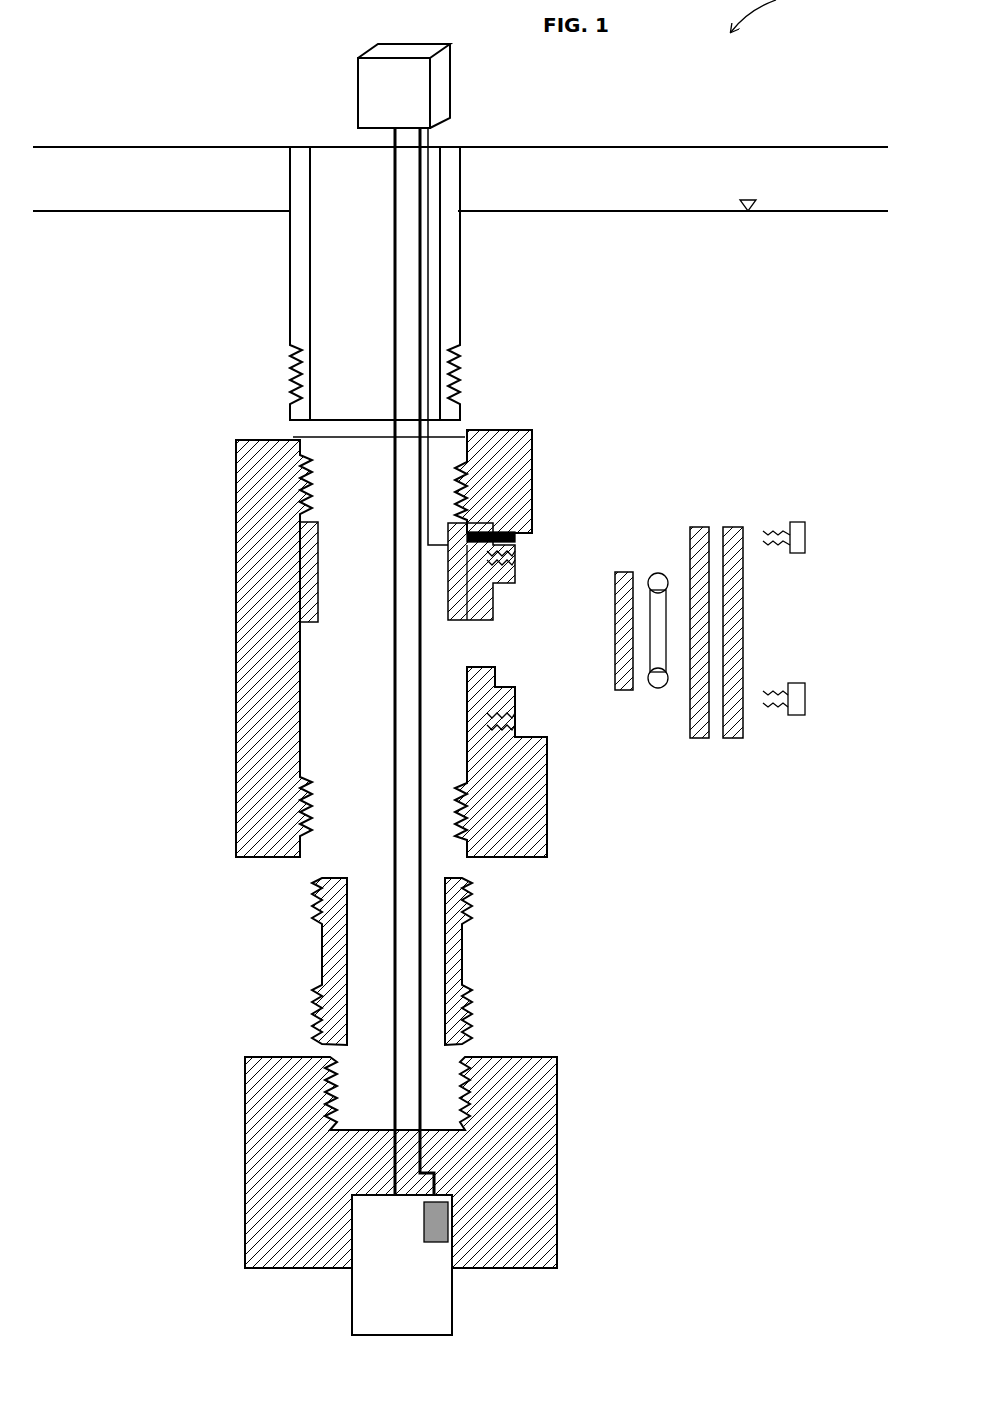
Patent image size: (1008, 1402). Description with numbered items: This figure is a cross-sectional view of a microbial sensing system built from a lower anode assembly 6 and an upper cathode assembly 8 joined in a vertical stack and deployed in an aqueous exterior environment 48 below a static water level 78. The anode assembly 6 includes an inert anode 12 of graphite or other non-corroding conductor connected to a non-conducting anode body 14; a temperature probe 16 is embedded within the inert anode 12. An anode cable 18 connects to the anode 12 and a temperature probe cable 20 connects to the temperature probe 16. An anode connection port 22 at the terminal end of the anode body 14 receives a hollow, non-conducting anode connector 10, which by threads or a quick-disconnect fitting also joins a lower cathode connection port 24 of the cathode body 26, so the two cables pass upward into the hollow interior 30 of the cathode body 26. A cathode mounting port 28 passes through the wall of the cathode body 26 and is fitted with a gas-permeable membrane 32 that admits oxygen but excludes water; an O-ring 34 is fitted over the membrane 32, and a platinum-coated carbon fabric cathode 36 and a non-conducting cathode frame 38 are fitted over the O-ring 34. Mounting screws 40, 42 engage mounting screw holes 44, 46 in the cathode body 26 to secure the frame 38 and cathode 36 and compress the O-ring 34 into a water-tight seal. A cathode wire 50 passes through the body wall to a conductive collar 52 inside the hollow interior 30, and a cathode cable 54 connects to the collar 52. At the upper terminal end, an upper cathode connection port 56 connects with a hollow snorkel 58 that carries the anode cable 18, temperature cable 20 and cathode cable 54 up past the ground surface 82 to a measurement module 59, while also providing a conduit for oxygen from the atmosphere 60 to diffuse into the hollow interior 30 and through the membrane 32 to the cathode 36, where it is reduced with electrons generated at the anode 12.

The anode assembly 6 is at (364, 1170).
The cathode assembly 8 is at (363, 643).
The anode connector 10 is at (322, 960).
The inert anode 12 is at (430, 1318).
The anode body 14 is at (545, 1205).
The temperature probe 16 is at (430, 1248).
The anode cable 18 is at (392, 1112).
The temperature probe cable 20 is at (421, 1112).
The anode connection port 22 is at (470, 1062).
The lower cathode connection port 24 is at (275, 878).
The cathode body 26 is at (232, 712).
The cathode mounting port 28 is at (486, 655).
The hollow interior 30 is at (385, 693).
The gas-permeable membrane 32 is at (618, 690).
The O-ring 34 is at (650, 670).
The cathode 36 is at (685, 735).
The cathode frame 38 is at (745, 722).
The mounting screw 40 is at (800, 715).
The mounting screw 42 is at (808, 508).
The mounting screw hole 44 is at (517, 722).
The mounting screw hole 46 is at (516, 556).
The exterior environment 48 is at (740, 639).
The cathode wire 50 is at (515, 537).
The conductive collar 52 is at (318, 600).
The cathode cable 54 is at (428, 470).
The upper cathode connection port 56 is at (290, 435).
The snorkel 58 is at (290, 297).
The measurement module 59 is at (358, 100).
The atmosphere 60 is at (820, 125).
The static water level 78 is at (749, 194).
The surface 82 is at (158, 147).